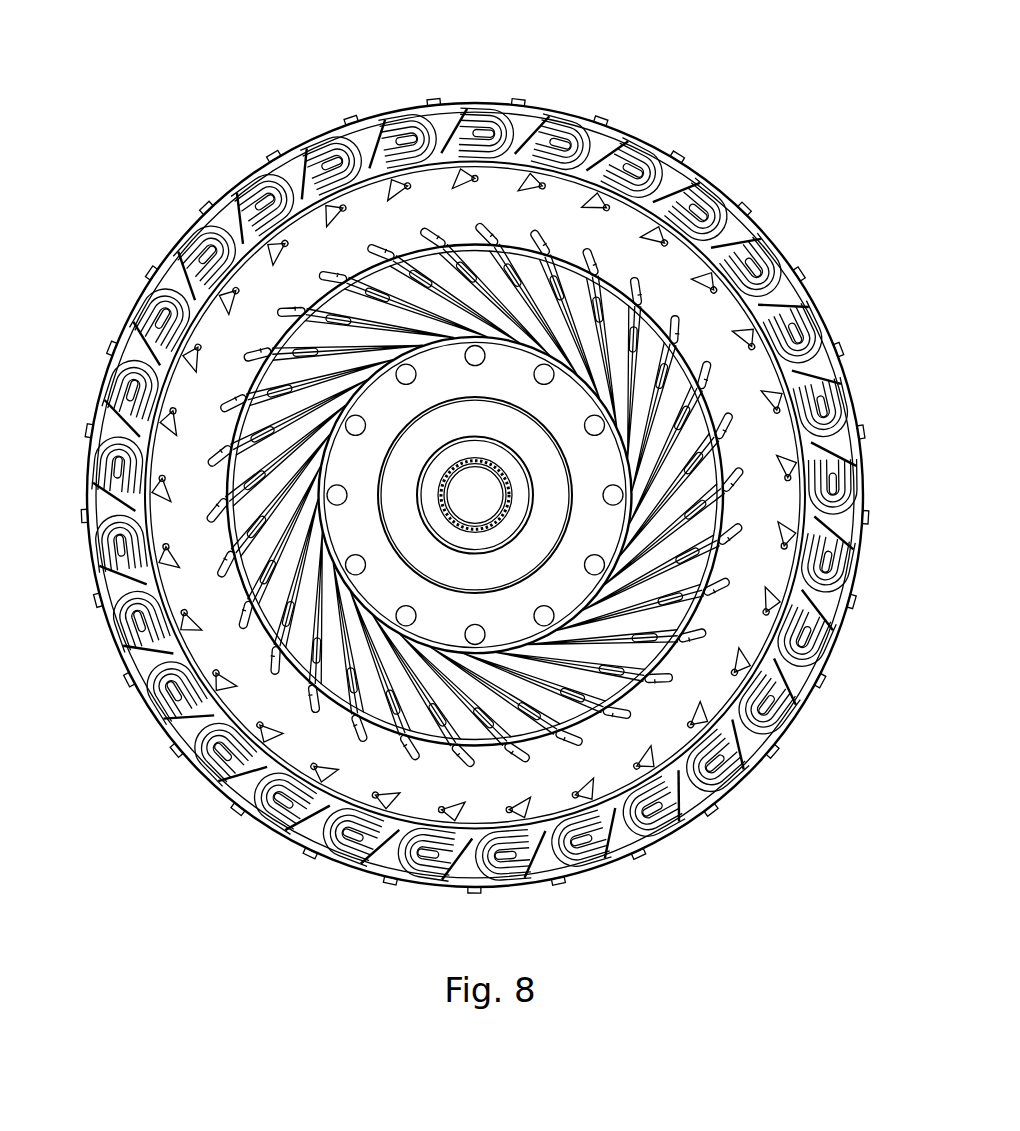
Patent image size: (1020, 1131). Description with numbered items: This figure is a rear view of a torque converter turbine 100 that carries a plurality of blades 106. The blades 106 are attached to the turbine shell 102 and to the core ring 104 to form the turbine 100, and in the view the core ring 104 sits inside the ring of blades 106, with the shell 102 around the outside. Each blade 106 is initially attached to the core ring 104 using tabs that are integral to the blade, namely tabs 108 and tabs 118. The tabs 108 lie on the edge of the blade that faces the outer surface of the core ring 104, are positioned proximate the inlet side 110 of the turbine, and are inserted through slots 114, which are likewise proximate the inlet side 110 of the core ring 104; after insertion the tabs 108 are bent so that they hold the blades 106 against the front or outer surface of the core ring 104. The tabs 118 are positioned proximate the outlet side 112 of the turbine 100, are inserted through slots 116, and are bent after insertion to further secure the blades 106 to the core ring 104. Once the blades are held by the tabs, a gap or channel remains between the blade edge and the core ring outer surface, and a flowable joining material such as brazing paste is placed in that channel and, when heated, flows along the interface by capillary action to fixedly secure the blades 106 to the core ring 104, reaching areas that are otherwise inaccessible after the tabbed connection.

The torque converter turbine 100 is at (308, 82).
The turbine shell 102 is at (697, 177).
The core ring 104 is at (718, 313).
The turbine blade 106 is at (790, 340).
The tab 108 is at (603, 187).
The inlet side 110 is at (808, 395).
The outlet side 112 is at (709, 527).
The slot 114 is at (583, 195).
The slot 116 is at (495, 243).
The tab 118 is at (490, 233).